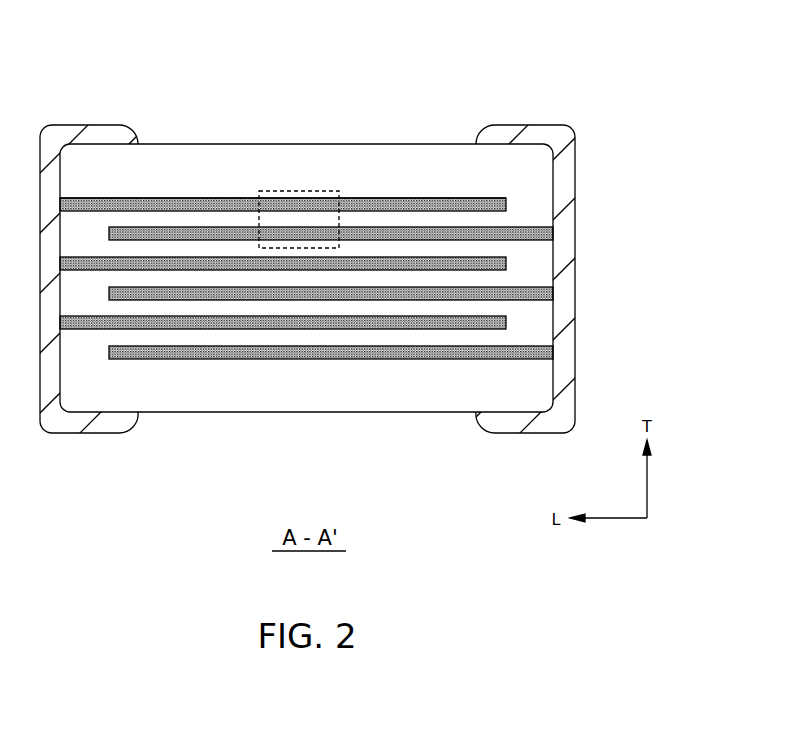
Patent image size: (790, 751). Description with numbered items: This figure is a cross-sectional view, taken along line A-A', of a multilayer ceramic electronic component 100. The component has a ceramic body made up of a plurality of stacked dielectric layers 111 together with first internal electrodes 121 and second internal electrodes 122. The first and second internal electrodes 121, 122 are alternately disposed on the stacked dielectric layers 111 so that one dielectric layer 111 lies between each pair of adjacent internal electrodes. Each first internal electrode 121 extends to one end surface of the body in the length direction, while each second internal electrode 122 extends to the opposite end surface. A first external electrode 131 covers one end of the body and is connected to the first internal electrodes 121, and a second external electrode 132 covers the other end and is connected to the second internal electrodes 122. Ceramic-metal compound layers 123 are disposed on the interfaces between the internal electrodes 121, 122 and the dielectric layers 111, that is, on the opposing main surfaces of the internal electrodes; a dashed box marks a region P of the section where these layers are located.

The multilayer ceramic electronic component 100 is at (328, 40).
The dielectric layer 111 is at (427, 221).
The first internal electrode 121 is at (202, 329).
The second internal electrode 122 is at (400, 359).
The ceramic-metal compound layer 123 is at (386, 198).
The first external electrode 131 is at (94, 135).
The second external electrode 132 is at (528, 132).
The enlarged region P is at (317, 190).